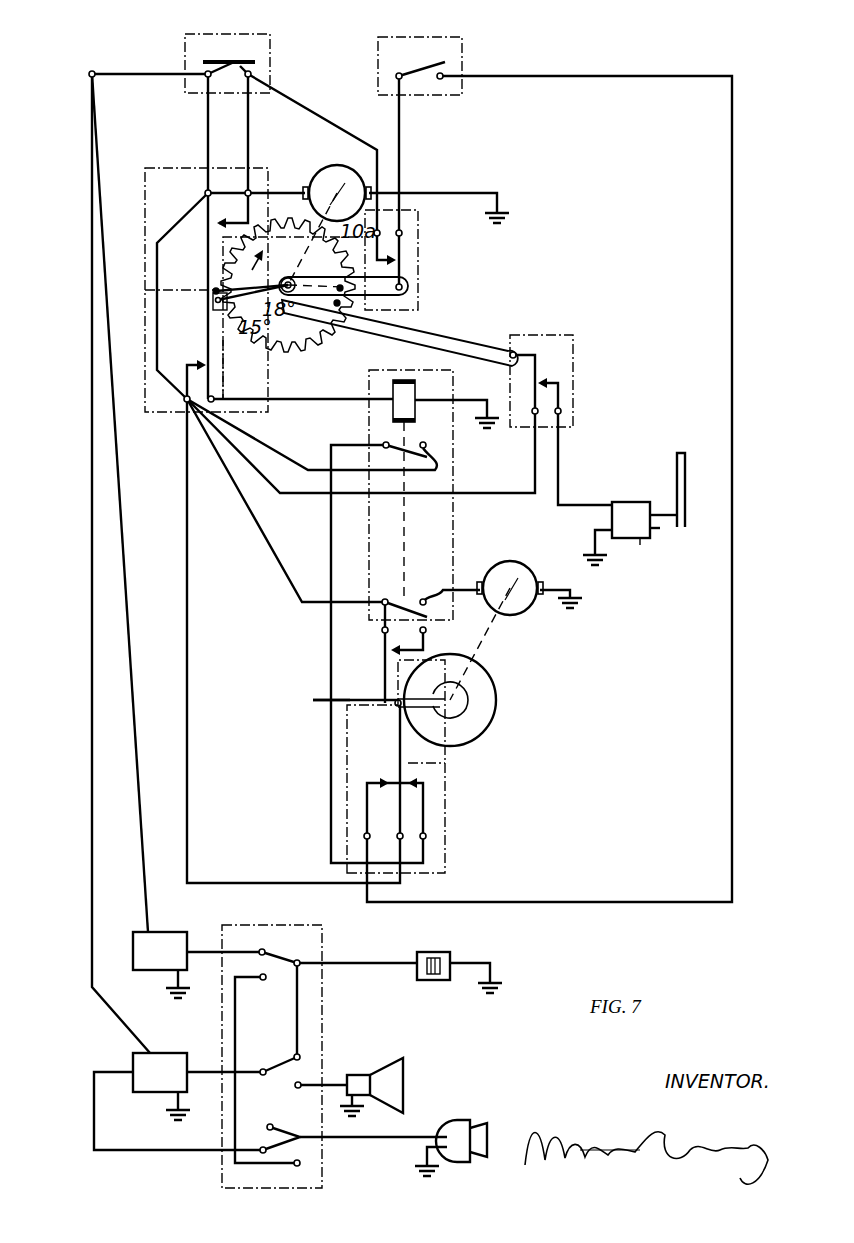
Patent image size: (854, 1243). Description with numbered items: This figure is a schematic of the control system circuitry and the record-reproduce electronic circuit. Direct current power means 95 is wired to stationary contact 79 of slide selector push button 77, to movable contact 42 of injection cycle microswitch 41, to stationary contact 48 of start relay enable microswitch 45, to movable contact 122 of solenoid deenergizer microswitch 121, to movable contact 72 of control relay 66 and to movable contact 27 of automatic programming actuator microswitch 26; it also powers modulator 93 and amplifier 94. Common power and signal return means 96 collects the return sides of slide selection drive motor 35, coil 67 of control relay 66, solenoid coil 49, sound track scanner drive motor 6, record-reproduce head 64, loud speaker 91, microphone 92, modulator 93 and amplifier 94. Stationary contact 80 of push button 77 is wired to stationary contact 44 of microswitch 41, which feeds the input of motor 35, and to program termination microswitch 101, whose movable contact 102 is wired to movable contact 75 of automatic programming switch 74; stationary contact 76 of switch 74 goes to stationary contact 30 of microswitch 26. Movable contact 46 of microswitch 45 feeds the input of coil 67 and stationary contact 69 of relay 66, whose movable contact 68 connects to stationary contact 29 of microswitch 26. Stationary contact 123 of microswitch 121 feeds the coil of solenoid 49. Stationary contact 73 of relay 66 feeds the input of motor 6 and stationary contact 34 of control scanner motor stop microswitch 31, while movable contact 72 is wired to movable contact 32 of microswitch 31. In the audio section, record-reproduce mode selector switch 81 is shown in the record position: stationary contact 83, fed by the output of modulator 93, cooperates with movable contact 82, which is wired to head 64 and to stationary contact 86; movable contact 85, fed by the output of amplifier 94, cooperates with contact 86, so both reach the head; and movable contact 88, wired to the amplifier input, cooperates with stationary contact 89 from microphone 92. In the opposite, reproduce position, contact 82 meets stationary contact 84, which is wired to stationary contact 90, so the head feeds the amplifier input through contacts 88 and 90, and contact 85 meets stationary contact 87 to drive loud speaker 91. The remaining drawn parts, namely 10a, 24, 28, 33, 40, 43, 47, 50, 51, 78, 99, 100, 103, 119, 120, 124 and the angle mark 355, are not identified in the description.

The sound track scanner drive motor 6 is at (492, 570).
The terminal 10a is at (377, 233).
The cam 24 is at (487, 690).
The automatic programming actuator microswitch 26 is at (447, 795).
The movable contact 27 is at (425, 840).
The cam follower pivot 28 is at (397, 707).
The stationary contact 29 is at (403, 836).
The stationary contact 30 is at (365, 836).
The control scanner motor stop microswitch 31 is at (372, 696).
The movable contact 32 is at (383, 632).
The follower arm 33 is at (316, 698).
The stationary contact 34 is at (425, 632).
The slide selection drive motor 35 is at (336, 165).
The toothed wheel 40 is at (296, 350).
The injection cycle microswitch 41 is at (178, 166).
The movable contact 42 is at (205, 193).
The contact 43 is at (214, 290).
The stationary contact 44 is at (250, 192).
The start relay enable microswitch 45 is at (225, 355).
The movable contact 46 is at (213, 398).
The contact 47 is at (216, 301).
The stationary contact 48 is at (185, 403).
The solenoid coil 49 is at (640, 540).
The solenoid 50 is at (660, 530).
The solenoid plunger 51 is at (676, 470).
The record-reproduce head 64 is at (432, 951).
The control relay 66 is at (455, 475).
The coil 67 is at (418, 385).
The movable contact 68 is at (384, 444).
The stationary contact 69 is at (438, 428).
The movable contact 72 is at (384, 600).
The stationary contact 73 is at (440, 572).
The automatic programming switch 74 is at (405, 36).
The movable contact 75 is at (397, 76).
The stationary contact 76 is at (442, 78).
The slide selector push button 77 is at (195, 33).
The switch bar 78 is at (228, 60).
The stationary contact 79 is at (206, 76).
The stationary contact 80 is at (250, 75).
The record-reproduce mode selector switch 81 is at (325, 930).
The movable contact 82 is at (299, 965).
The stationary contact 83 is at (264, 951).
The stationary contact 84 is at (264, 979).
The movable contact 85 is at (265, 1070).
The stationary contact 86 is at (299, 1058).
The stationary contact 87 is at (298, 1088).
The movable contact 88 is at (268, 1141).
The stationary contact 89 is at (270, 1125).
The stationary contact 90 is at (299, 1164).
The loud speaker 91 is at (395, 1058).
The microphone 92 is at (468, 1120).
The modulator 93 is at (158, 932).
The amplifier 94 is at (133, 1056).
The direct current power means 95 is at (92, 71).
The common power and signal return means 96 is at (502, 212).
The slot 99 is at (395, 297).
The hub pin 100 is at (294, 279).
The program termination microswitch 101 is at (420, 262).
The movable contact 102 is at (401, 232).
The contact 103 is at (402, 287).
The lever 119 is at (398, 332).
The pointer 120 is at (337, 306).
The solenoid deenergizer microswitch 121 is at (574, 338).
The movable contact 122 is at (533, 414).
The stationary contact 123 is at (561, 411).
The contact 124 is at (515, 356).
The cam angle 355 is at (468, 710).